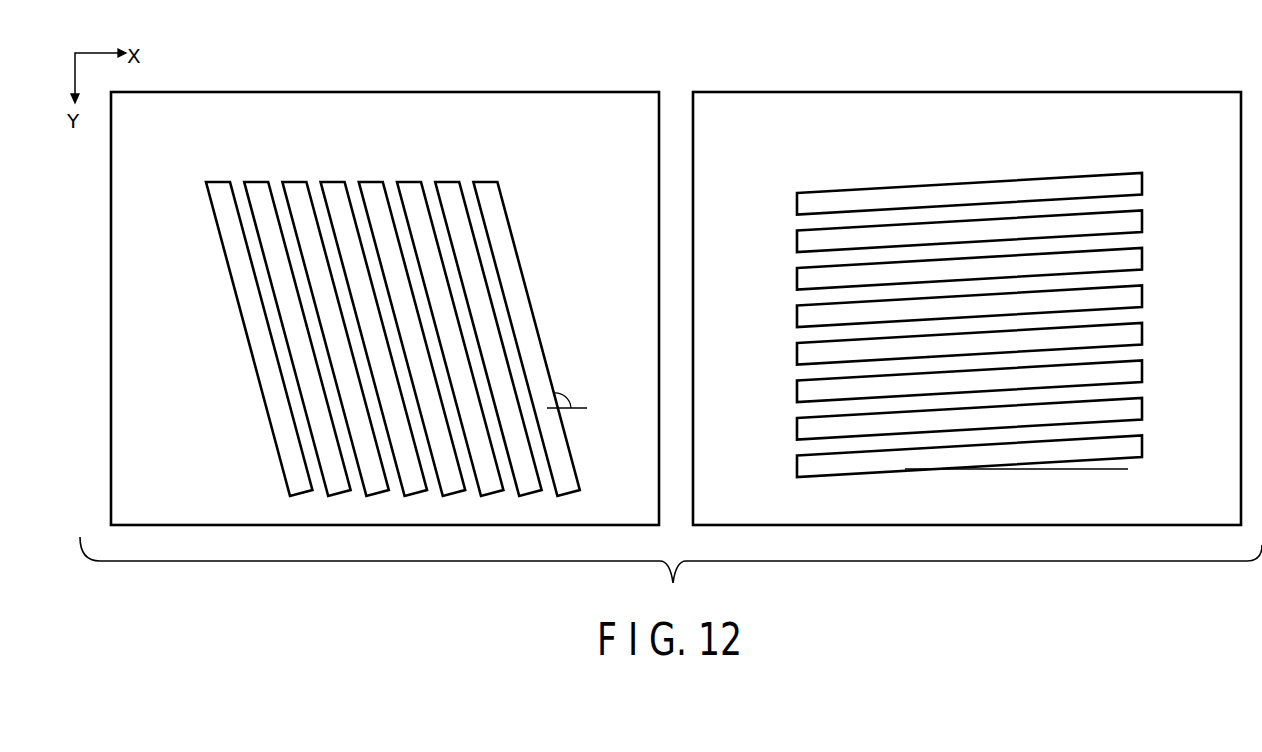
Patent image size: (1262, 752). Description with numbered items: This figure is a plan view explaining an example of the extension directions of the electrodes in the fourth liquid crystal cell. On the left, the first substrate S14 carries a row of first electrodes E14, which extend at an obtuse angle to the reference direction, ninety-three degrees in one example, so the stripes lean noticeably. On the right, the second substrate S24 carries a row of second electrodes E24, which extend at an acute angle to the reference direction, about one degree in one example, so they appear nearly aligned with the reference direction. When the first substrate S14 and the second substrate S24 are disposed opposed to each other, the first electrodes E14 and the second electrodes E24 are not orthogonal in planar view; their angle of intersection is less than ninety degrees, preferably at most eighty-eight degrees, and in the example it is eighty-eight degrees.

The first substrate S14 is at (580, 92).
The first electrodes E14 is at (497, 213).
The second substrate S24 is at (1163, 92).
The second electrodes E24 is at (1142, 446).